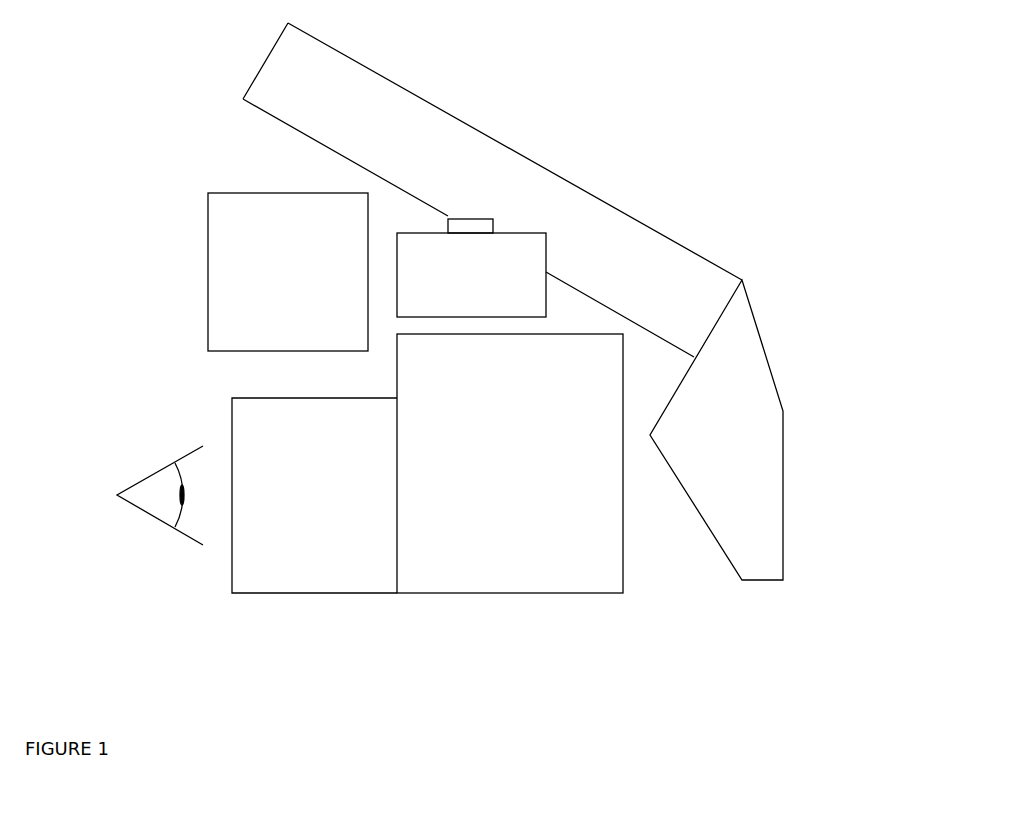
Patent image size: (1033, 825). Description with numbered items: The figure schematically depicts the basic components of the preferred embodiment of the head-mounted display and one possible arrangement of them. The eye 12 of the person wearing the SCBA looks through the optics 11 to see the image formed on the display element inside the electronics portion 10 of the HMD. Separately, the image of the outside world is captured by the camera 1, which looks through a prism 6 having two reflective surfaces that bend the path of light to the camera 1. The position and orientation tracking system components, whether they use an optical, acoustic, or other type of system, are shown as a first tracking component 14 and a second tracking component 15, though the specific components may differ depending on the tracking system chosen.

The camera 1 is at (417, 130).
The prism 6 is at (733, 463).
The electronics portion 10 is at (476, 553).
The optics 11 is at (309, 548).
The eye 12 is at (160, 495).
The position and orientation tracking system component 14 is at (267, 248).
The position and orientation tracking system component 15 is at (471, 268).